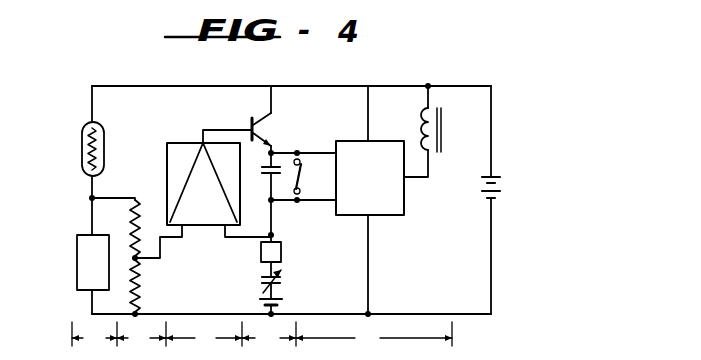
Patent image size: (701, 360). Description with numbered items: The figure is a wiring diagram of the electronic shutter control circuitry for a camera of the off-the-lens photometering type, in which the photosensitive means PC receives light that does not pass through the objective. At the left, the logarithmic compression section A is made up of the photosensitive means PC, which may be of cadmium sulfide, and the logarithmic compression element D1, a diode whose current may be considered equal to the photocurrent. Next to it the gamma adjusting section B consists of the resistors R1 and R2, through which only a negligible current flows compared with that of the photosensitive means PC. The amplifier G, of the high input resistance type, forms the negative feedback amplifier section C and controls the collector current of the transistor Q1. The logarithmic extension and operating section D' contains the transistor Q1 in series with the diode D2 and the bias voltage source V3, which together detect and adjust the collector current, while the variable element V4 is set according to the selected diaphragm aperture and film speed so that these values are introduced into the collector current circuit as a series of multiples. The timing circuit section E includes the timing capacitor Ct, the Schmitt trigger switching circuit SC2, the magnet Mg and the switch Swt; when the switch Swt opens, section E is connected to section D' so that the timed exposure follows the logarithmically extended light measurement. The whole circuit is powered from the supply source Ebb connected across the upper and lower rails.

The photosensitive means PC is at (105, 148).
The resistor R1 is at (132, 223).
The resistor R2 is at (140, 290).
The logarithmic compression element D1 is at (80, 266).
The logarithmic compression element D2 is at (282, 247).
The amplifier G is at (203, 184).
The transistor Q1 is at (275, 129).
The timing capacitor Ct is at (266, 178).
The switch Swt is at (312, 176).
The Schmitt trigger switching circuit SC2 is at (370, 178).
The magnet Mg is at (443, 136).
The supply voltage source Ebb is at (501, 191).
The bias voltage source V3 is at (283, 304).
The variable resistor V4 is at (283, 281).
The logarithmic compression section A is at (94, 335).
The gamma adjusting section B is at (141, 336).
The negative feedback amplifier section C is at (204, 335).
The logarithmic extension and operating section D' is at (269, 336).
The timing circuit section E is at (374, 336).